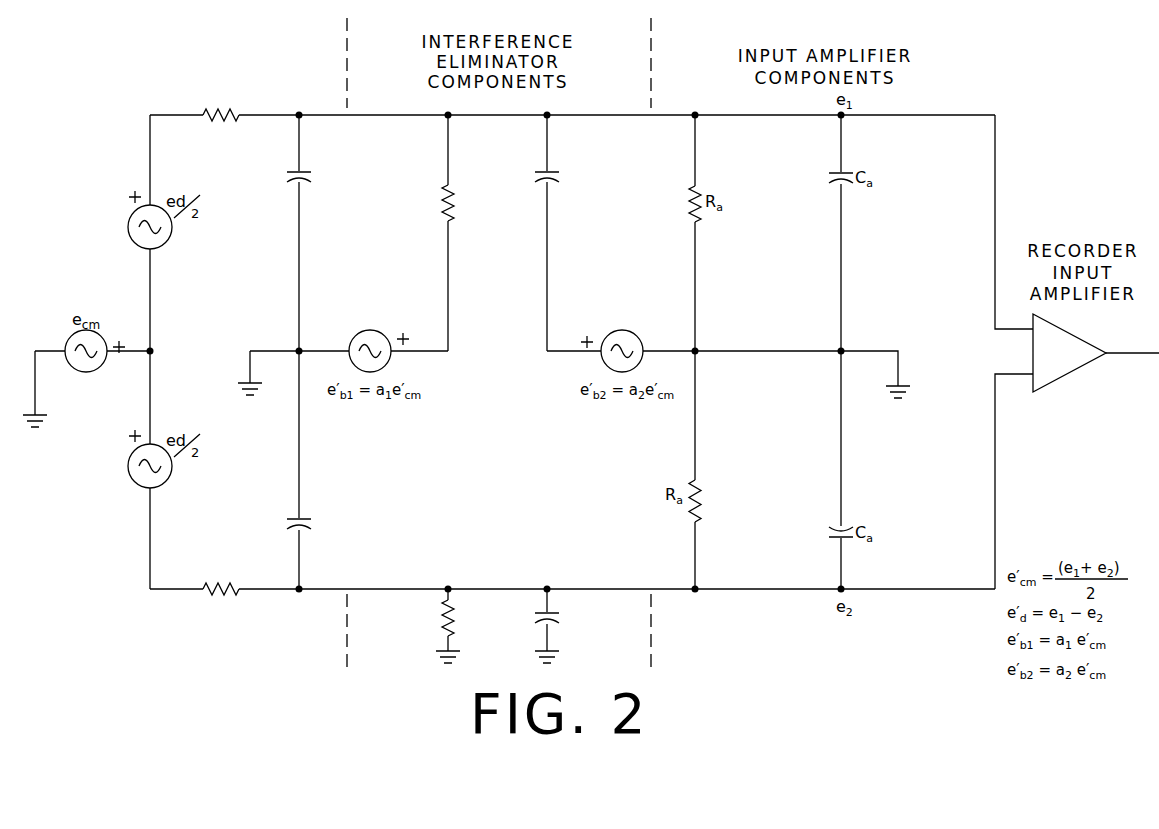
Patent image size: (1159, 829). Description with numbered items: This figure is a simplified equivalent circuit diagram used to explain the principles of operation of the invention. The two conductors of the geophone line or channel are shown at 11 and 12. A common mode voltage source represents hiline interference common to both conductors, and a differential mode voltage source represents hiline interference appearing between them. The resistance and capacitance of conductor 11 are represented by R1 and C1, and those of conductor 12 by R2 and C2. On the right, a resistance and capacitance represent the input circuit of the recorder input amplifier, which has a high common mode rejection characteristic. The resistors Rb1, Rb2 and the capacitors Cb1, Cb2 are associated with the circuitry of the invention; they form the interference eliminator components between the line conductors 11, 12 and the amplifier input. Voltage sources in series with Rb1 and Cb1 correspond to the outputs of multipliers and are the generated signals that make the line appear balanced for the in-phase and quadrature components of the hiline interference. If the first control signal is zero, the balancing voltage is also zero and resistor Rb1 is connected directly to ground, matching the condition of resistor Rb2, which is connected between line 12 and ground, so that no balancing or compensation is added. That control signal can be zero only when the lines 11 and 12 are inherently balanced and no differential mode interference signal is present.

The conductor 11 is at (181, 113).
The conductor 12 is at (178, 591).
The resistance of conductor R1 is at (221, 104).
The resistance of conductor R2 is at (221, 600).
The capacitance of conductor C1 is at (307, 179).
The capacitance of conductor C2 is at (307, 526).
The resistor Rb1 is at (433, 203).
The resistor Rb2 is at (432, 618).
The capacitor Cb1 is at (561, 179).
The capacitor Cb2 is at (560, 623).